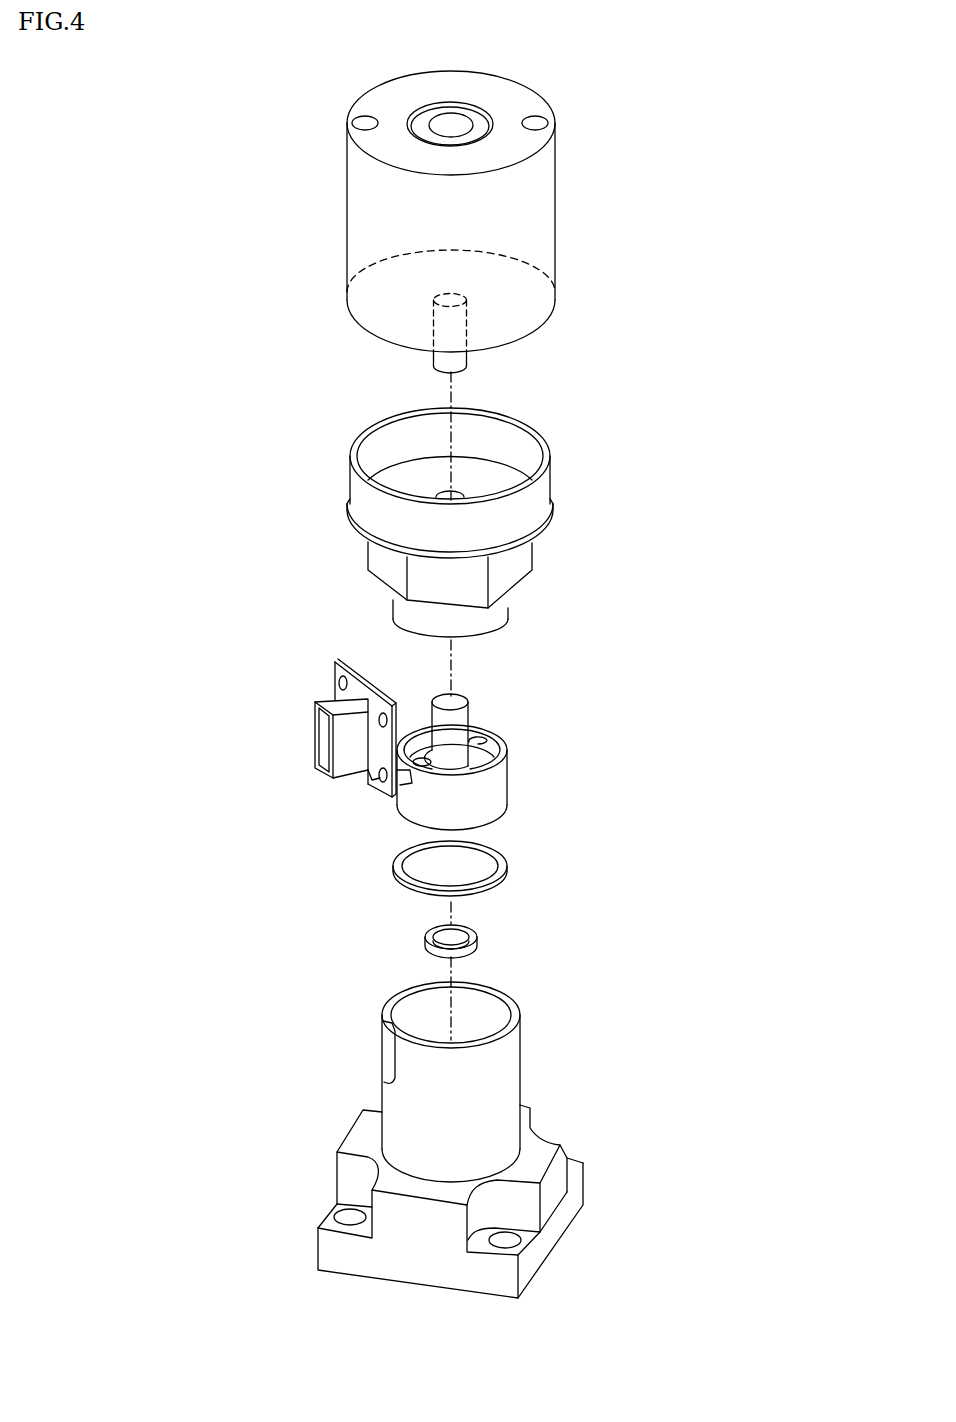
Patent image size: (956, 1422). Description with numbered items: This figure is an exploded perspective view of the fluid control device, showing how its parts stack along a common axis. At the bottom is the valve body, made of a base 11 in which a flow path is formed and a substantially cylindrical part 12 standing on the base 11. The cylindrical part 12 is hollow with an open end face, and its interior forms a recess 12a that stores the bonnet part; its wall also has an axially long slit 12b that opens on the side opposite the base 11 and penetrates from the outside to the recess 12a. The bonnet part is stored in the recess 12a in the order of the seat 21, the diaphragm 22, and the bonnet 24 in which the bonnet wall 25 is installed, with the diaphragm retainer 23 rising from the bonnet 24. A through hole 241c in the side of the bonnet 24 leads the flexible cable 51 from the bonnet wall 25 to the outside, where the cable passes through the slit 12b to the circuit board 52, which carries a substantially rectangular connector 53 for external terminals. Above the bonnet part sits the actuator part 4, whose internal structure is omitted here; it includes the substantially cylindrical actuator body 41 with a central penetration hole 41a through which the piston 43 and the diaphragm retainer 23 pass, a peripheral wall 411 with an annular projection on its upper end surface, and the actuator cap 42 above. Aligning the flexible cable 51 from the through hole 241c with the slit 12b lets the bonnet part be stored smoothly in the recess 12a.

The actuator part 4 is at (572, 139).
The actuator cap 42 is at (557, 213).
The piston 43 is at (472, 358).
The actuator body 41 is at (570, 484).
The penetration hole 41a is at (447, 494).
The peripheral wall 411 is at (351, 497).
The circuit board 52 is at (337, 664).
The connector 53 is at (315, 737).
The flexible cable 51 is at (393, 797).
The diaphragm retainer 23 is at (472, 703).
The bonnet wall 25 is at (488, 743).
The bonnet 24 is at (508, 803).
The through hole 241c is at (415, 790).
The diaphragm 22 is at (507, 872).
The seat 21 is at (421, 939).
The recess 12a is at (508, 1012).
The cylindrical part 12 is at (520, 1068).
The slit 12b is at (388, 1060).
The base 11 is at (560, 1242).